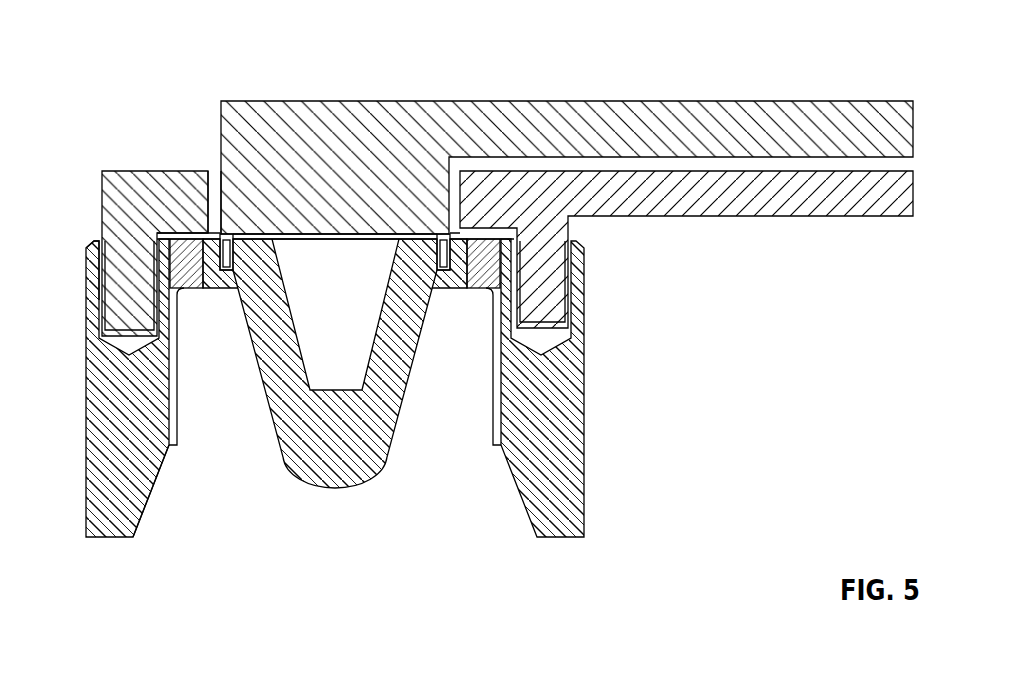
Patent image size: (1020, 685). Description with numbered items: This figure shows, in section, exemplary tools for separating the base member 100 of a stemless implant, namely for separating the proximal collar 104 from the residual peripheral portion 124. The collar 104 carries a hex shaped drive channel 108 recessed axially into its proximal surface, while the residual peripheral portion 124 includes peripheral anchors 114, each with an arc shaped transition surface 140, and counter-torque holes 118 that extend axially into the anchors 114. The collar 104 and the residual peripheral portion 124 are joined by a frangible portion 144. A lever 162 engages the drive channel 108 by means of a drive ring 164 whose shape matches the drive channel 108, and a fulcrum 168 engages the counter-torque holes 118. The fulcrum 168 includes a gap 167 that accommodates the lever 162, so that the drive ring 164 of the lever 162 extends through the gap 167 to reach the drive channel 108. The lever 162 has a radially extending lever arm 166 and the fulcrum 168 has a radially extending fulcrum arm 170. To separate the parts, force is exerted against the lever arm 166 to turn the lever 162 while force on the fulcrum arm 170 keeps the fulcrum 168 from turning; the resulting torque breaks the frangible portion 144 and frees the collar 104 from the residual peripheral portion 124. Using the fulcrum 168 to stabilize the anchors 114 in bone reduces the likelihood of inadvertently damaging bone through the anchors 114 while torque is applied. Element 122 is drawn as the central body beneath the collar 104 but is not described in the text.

The base member 100 is at (128, 32).
The proximal collar 104 is at (467, 263).
The drive channel 108 is at (445, 288).
The peripheral anchors 114 is at (85, 352).
The counter-torque holes 118 is at (86, 247).
The central core 122 is at (365, 486).
The residual peripheral portion 124 is at (585, 363).
The transition surface 140 is at (150, 488).
The frangible portion 144 is at (190, 290).
The lever 162 is at (218, 103).
The drive ring 164 is at (222, 253).
The lever arm 166 is at (752, 101).
The gap 167 is at (213, 171).
The fulcrum 168 is at (120, 170).
The fulcrum arm 170 is at (835, 217).